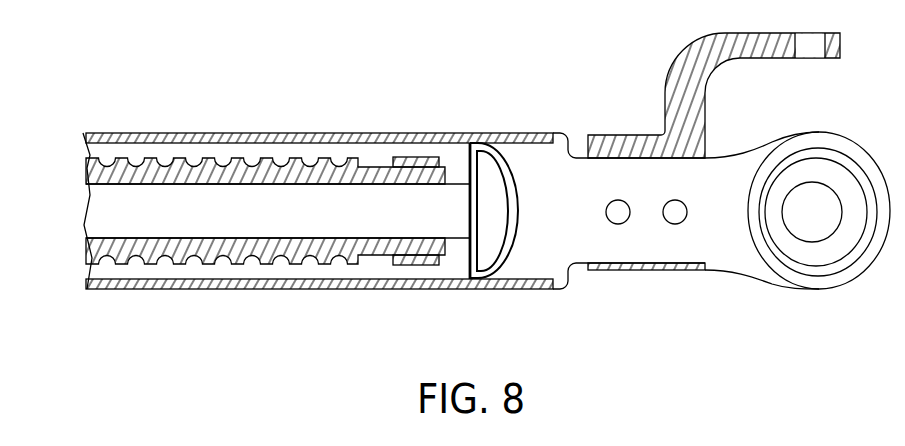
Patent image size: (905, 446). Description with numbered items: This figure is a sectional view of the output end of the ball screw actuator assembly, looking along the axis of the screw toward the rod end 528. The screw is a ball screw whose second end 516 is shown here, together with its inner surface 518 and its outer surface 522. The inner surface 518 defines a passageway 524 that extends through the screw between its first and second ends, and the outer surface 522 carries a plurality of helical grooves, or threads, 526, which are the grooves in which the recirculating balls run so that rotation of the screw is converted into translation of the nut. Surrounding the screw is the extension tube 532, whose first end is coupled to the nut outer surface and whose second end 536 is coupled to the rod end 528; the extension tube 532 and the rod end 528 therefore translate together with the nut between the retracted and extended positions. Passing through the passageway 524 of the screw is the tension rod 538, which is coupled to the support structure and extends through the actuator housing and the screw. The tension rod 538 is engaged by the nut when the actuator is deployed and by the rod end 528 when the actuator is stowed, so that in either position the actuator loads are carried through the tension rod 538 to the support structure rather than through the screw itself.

The second end 516 is at (428, 168).
The inner surface 518 is at (198, 186).
The outer surface 522 is at (130, 158).
The passageway 524 is at (445, 177).
The helical grooves 526 is at (308, 162).
The rod end 528 is at (715, 253).
The extension tube 532 is at (397, 135).
The second end 536 is at (545, 138).
The tension rod 538 is at (250, 195).